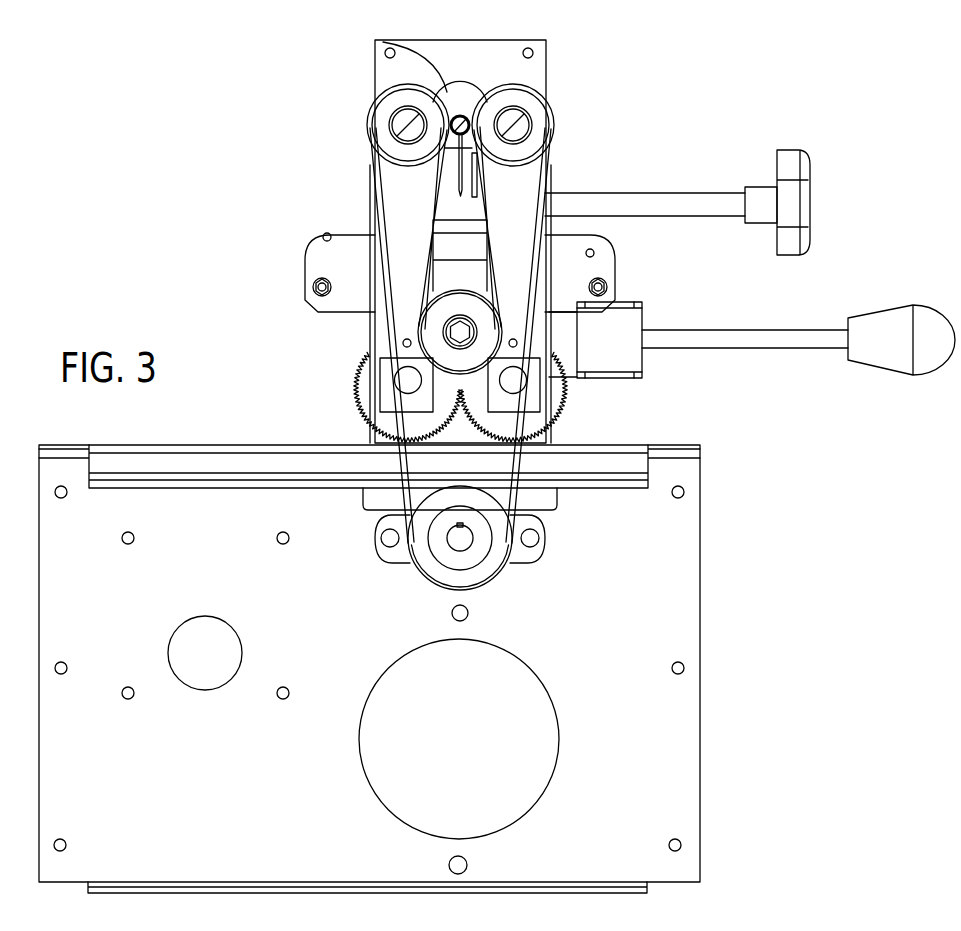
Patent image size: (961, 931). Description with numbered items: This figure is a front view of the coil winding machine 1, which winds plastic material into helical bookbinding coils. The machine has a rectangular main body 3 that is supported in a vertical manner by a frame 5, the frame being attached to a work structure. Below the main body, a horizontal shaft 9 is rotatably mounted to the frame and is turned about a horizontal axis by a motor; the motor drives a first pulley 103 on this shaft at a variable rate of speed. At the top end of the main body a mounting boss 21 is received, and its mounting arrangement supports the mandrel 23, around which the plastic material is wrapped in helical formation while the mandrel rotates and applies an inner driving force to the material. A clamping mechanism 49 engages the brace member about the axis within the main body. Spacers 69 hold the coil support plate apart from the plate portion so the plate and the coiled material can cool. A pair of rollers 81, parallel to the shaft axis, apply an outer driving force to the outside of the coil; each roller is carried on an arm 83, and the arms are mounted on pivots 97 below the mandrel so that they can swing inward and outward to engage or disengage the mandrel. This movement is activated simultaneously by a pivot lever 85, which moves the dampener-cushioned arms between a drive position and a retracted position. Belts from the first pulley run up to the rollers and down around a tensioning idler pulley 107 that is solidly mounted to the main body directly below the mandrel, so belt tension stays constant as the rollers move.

The coil winding machine 1 is at (603, 127).
The main body 3 is at (380, 75).
The frame 5 is at (683, 538).
The horizontal shaft 9 is at (465, 545).
The mounting boss 21 is at (378, 42).
The mandrel 23 is at (462, 117).
The clamping mechanism 49 is at (461, 55).
The spacers 69 is at (490, 182).
The rollers 81 is at (368, 133).
The arm 83 is at (397, 207).
The pivot lever 85 is at (716, 332).
The pivots 97 is at (402, 380).
The first pulley 103 is at (425, 562).
The tensioning idler pulley 107 is at (427, 332).